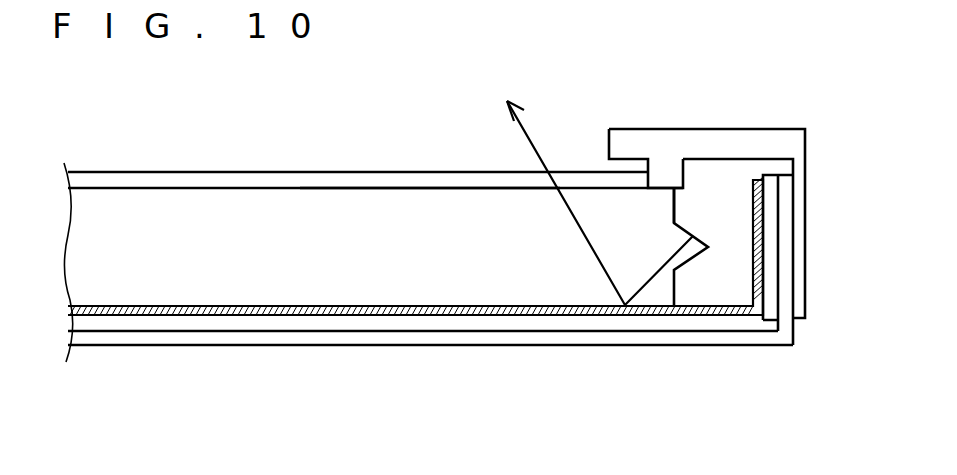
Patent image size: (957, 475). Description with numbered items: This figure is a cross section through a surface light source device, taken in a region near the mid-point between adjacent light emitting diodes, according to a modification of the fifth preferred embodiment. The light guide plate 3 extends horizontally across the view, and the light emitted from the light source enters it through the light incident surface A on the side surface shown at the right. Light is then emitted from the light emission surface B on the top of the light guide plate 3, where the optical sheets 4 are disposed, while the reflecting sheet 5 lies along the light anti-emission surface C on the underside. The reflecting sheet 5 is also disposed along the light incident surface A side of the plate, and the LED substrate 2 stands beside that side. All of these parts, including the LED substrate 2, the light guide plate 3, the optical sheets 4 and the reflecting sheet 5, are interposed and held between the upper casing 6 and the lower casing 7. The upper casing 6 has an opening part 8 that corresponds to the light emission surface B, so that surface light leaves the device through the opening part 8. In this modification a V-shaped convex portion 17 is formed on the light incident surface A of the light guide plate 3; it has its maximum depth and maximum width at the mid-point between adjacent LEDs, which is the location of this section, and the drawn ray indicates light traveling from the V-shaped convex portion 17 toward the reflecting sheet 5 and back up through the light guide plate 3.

The LED substrate 2 is at (770, 321).
The light guide plate 3 is at (460, 208).
The optical sheets 4 is at (302, 180).
The reflecting sheet 5 is at (257, 316).
The upper casing 6 is at (725, 143).
The lower casing 7 is at (415, 338).
The opening part 8 is at (609, 145).
The V-shaped convex portion 17 is at (698, 259).
The light incident surface A is at (675, 209).
The light emission surface B is at (387, 185).
The light anti-emission surface C is at (340, 317).